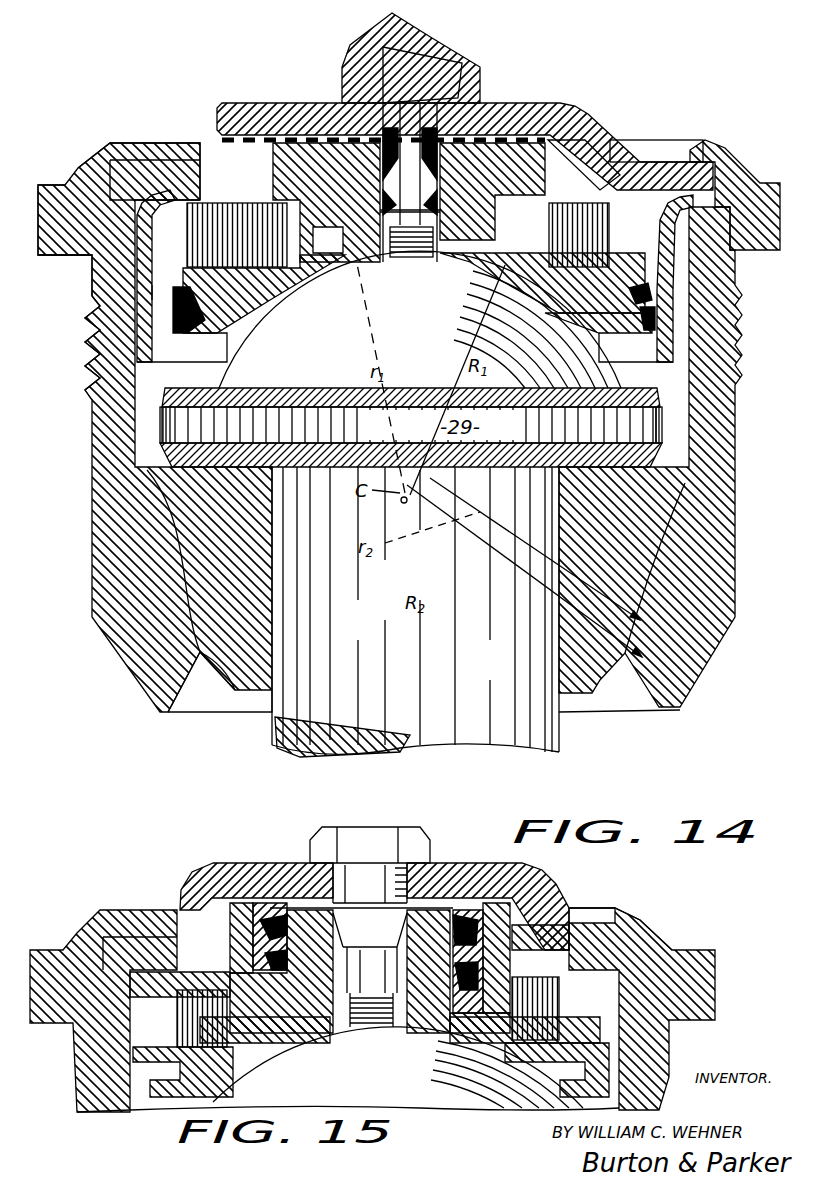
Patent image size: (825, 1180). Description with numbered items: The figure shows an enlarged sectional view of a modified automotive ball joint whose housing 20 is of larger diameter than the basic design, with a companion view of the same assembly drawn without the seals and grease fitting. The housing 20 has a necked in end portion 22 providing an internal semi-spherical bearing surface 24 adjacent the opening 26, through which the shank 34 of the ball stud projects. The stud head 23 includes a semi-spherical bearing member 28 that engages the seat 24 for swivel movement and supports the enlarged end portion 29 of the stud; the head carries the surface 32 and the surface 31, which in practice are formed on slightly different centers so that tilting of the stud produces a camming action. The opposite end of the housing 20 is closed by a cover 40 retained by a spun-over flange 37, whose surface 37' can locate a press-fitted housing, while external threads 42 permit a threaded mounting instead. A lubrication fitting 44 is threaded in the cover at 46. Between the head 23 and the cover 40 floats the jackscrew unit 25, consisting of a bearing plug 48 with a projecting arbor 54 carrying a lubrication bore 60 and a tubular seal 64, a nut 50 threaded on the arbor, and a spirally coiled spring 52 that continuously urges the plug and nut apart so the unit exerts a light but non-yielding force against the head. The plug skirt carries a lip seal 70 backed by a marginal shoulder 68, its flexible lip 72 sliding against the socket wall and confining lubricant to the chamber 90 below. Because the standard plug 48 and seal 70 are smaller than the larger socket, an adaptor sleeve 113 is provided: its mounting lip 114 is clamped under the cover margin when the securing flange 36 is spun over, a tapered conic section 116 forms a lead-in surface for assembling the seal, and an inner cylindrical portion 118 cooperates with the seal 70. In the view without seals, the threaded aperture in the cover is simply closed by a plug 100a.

In FIG. 14, the ball joint housing 20 is at (92, 490).
In FIG. 15, the ball joint housing 20 is at (88, 1063).
In FIG. 14, the necked in end portion 22 is at (145, 655).
In FIG. 14, the head 23 is at (160, 440).
In FIG. 14, the bearing surface 24 is at (162, 568).
In FIG. 14, the jackscrew unit 25 is at (565, 165).
In FIG. 14, the opening 26 is at (196, 700).
In FIG. 14, the bearing member 28 is at (650, 578).
In FIG. 14, the enlarged end portion 29 is at (411, 425).
In FIG. 14, the surface 31 is at (233, 692).
In FIG. 14, the surface 32 is at (448, 335).
In FIG. 14, the shank 34 is at (479, 735).
In FIG. 14, the securing flange 36 is at (118, 152).
In FIG. 15, the securing flange 36 is at (626, 918).
In FIG. 14, the flange 37 is at (48, 214).
In FIG. 14, the surface 37' is at (47, 262).
In FIG. 14, the cover 40 is at (548, 108).
In FIG. 15, the cover 40 is at (256, 873).
In FIG. 14, the external threads 42 is at (92, 362).
In FIG. 14, the fitting 44 is at (365, 43).
In FIG. 14, the threaded connection 46 is at (506, 136).
In FIG. 14, the bearing plug 48 is at (462, 230).
In FIG. 15, the bearing plug 48 is at (412, 1030).
In FIG. 14, the nut 50 is at (548, 170).
In FIG. 15, the nut 50 is at (436, 930).
In FIG. 15, the stored energy means 52 is at (558, 1010).
In FIG. 14, the arbor 54 is at (320, 197).
In FIG. 14, the lubrication bore 60 is at (357, 272).
In FIG. 14, the tubular seal 64 is at (410, 200).
In FIG. 15, the marginal shoulder 68 is at (606, 1058).
In FIG. 14, the lip seal 70 is at (650, 291).
In FIG. 14, the flexible lip 72 is at (642, 328).
In FIG. 15, the chamber 90 is at (139, 1106).
In FIG. 15, the plug 100a is at (386, 838).
In FIG. 14, the adaptor sleeve 113 is at (150, 293).
In FIG. 14, the mounting lip 114 is at (130, 200).
In FIG. 14, the conic section 116 is at (145, 258).
In FIG. 14, the inner cylindrical portion 118 is at (175, 326).